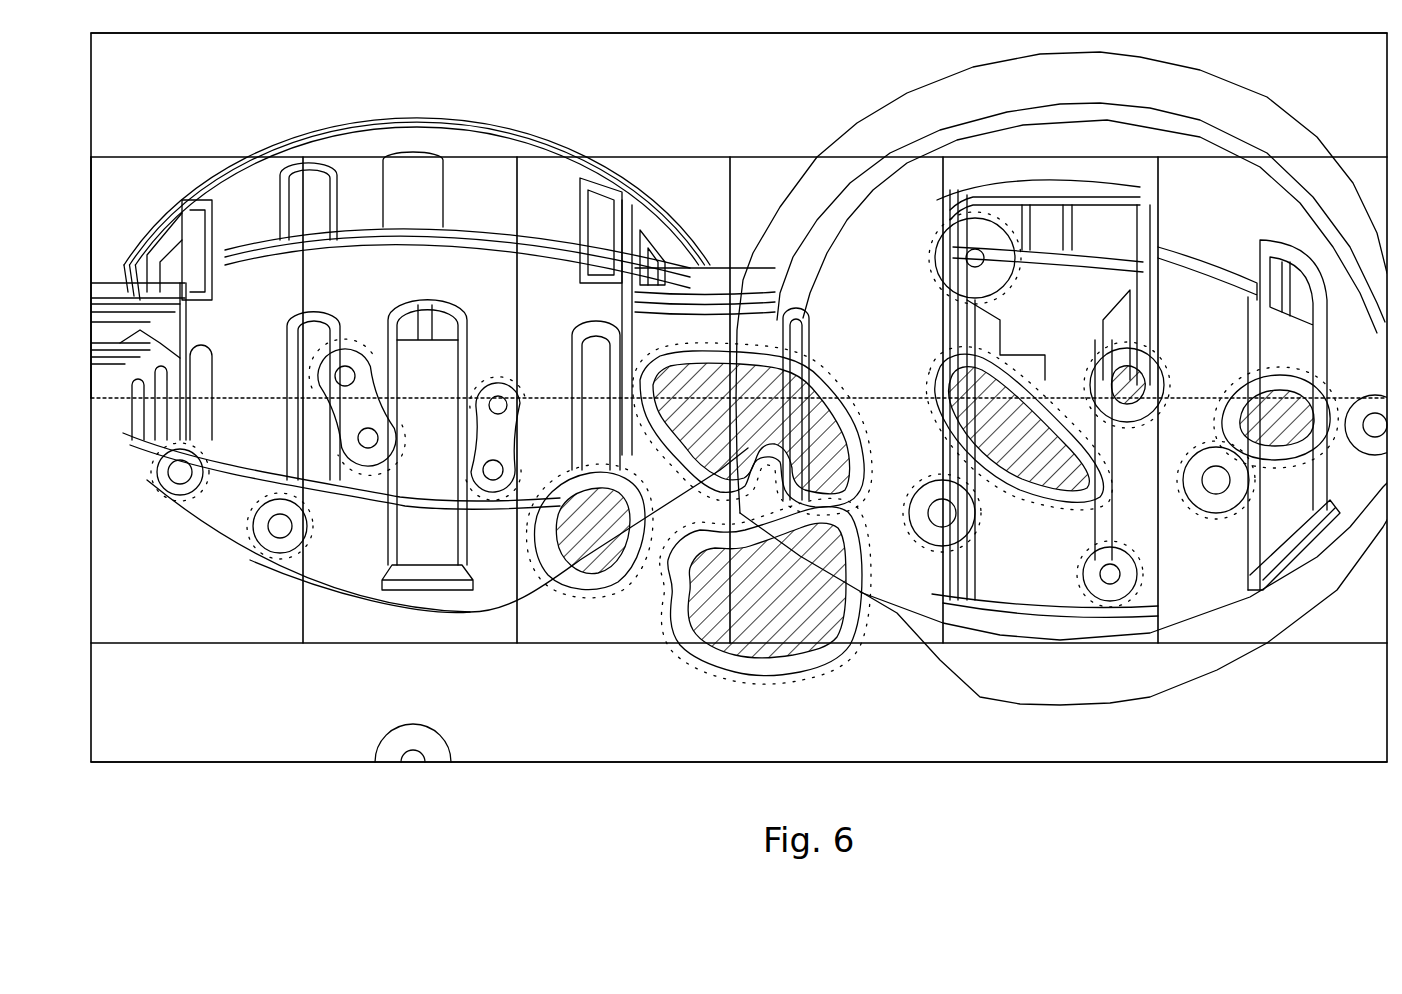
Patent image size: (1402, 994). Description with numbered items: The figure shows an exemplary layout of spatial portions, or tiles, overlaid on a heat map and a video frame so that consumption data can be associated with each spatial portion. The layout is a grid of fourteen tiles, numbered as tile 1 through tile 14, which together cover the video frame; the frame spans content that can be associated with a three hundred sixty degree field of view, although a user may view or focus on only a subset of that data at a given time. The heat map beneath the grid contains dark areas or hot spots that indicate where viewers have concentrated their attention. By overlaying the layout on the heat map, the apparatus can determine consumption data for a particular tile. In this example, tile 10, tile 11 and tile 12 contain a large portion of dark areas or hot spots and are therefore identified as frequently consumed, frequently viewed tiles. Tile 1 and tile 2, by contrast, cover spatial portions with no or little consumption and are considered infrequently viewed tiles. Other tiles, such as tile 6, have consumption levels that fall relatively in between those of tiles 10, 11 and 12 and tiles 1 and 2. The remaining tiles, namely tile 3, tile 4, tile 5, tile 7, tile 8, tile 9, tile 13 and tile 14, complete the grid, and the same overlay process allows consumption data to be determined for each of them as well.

The tile 1 is at (739, 58).
The tile 2 is at (117, 277).
The tile 3 is at (328, 400).
The tile 4 is at (541, 400).
The tile 5 is at (752, 400).
The tile 6 is at (969, 400).
The tile 7 is at (1174, 400).
The tile 8 is at (161, 457).
The tile 9 is at (357, 407).
The tile 10 is at (512, 438).
The tile 11 is at (752, 429).
The tile 12 is at (1019, 428).
The tile 13 is at (1254, 417).
The tile 14 is at (739, 710).